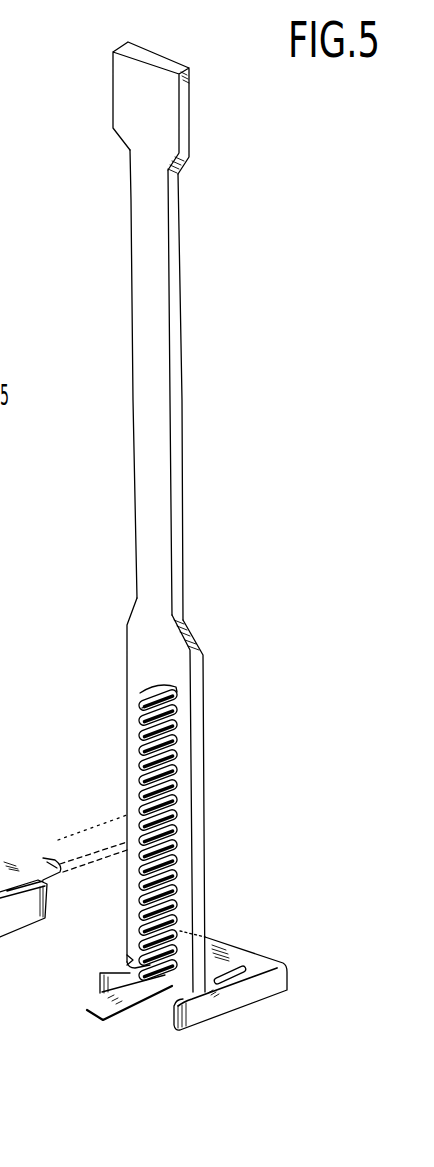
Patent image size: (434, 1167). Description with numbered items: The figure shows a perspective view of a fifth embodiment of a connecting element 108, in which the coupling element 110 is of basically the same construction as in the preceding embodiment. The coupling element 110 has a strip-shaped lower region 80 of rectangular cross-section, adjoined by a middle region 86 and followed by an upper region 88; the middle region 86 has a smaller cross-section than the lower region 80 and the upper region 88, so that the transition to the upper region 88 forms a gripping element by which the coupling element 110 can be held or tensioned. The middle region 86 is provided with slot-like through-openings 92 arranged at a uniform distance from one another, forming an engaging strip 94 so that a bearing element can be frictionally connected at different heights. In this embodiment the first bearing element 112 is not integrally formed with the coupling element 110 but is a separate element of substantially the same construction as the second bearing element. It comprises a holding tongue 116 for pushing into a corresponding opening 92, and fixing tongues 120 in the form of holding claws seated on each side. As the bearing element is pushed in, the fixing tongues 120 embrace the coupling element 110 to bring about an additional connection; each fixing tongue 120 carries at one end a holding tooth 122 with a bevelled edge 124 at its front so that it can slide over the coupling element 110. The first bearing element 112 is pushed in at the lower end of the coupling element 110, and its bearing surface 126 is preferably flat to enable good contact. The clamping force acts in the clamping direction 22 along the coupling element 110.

The clamping direction 22 is at (88, 337).
The lower region 80 is at (137, 750).
The middle region 86 is at (143, 415).
The upper region 88 is at (130, 107).
The slot-like through-openings 92 is at (150, 687).
The engaging strip 94 is at (126, 712).
The connecting element 108 is at (307, 364).
The coupling element 110 is at (190, 602).
The first bearing element 112 is at (290, 1002).
The holding tongue 116 is at (122, 1020).
The fixing tongues 120 is at (132, 960).
The holding tooth 122 is at (130, 965).
The bevelled edge 124 is at (125, 997).
The bearing surface 126 is at (238, 948).